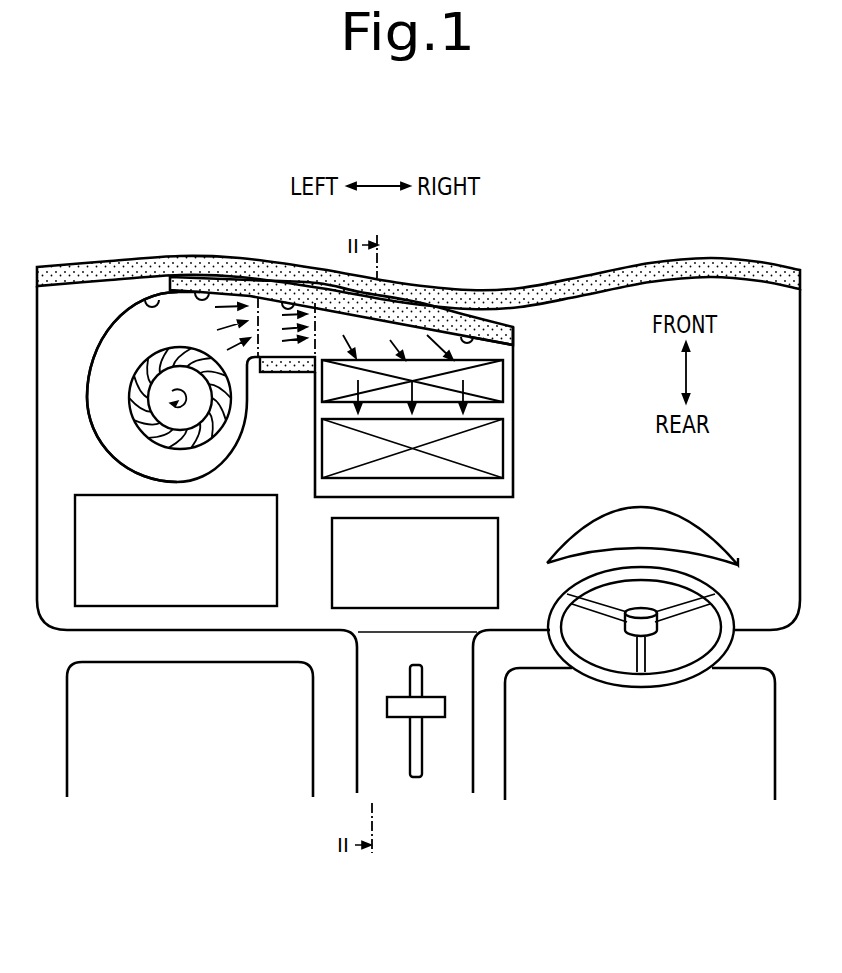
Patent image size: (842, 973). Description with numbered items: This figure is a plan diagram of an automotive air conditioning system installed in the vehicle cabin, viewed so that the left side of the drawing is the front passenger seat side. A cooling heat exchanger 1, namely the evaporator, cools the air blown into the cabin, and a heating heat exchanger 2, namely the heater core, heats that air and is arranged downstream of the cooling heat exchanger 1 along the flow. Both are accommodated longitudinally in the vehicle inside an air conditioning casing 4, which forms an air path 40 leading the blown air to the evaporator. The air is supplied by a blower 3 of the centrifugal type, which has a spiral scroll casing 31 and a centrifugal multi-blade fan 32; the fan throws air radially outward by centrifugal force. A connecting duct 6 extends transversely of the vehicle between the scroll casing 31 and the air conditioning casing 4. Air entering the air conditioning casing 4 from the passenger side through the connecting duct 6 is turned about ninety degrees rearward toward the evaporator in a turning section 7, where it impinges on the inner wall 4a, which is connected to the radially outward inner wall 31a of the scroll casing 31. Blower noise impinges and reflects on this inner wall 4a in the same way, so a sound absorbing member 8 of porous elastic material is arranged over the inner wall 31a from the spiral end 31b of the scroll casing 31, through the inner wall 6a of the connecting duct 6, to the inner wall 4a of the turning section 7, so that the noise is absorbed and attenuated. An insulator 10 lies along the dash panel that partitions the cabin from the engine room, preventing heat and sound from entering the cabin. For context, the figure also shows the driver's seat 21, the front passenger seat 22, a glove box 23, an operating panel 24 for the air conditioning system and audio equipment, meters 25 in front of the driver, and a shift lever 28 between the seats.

The cooling heat exchanger 1 is at (500, 385).
The heating heat exchanger 2 is at (500, 455).
The blower 3 is at (113, 322).
The air conditioning casing 4 is at (515, 421).
The inner wall of turning section 4a is at (467, 336).
The connecting duct 6 is at (270, 303).
The inner wall of connecting duct 6a is at (289, 300).
The turning section 7 is at (413, 335).
The sound absorbing member 8 is at (513, 330).
The insulator 10 is at (733, 265).
The driver's seat 21 is at (166, 733).
The front passenger seat 22 is at (622, 767).
The glove box 23 is at (151, 558).
The operating panel 24 is at (397, 573).
The meters 25 is at (723, 550).
The shift lever 28 is at (435, 712).
The scroll casing 31 is at (91, 363).
The radially outward inner wall of scroll casing 31a is at (152, 300).
The spiral end of scroll casing 31b is at (202, 292).
The centrifugal multi-blade fan 32 is at (128, 407).
The air path 40 is at (493, 348).